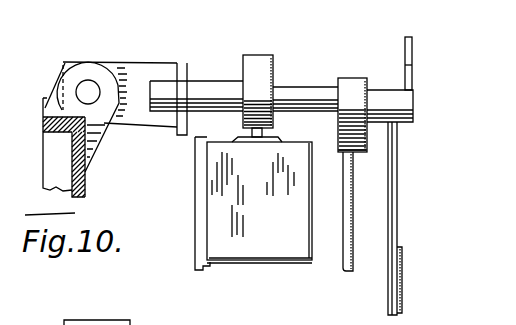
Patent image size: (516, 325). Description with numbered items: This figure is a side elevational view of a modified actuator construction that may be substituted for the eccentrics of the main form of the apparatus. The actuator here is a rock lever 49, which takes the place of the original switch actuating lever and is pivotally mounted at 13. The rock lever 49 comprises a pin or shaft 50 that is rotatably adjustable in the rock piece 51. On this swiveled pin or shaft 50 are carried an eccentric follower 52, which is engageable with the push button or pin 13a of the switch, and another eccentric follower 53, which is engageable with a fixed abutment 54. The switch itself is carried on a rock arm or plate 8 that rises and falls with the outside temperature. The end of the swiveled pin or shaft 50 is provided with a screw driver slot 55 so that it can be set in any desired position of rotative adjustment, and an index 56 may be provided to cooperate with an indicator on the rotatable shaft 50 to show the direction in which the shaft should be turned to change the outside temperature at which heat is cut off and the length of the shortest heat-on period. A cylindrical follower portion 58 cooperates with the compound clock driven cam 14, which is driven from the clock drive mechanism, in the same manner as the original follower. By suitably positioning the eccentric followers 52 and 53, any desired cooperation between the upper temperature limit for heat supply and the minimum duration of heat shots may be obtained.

The rock arm or plate 8 is at (281, 240).
The pivot 13 is at (89, 89).
The push button or pin 13a is at (250, 132).
The compound clock driven cam 14 is at (407, 243).
The rock lever 49 is at (306, 83).
The pin or shaft 50 is at (210, 84).
The rock piece 51 is at (143, 127).
The eccentric follower 52 is at (272, 52).
The eccentric follower 53 is at (339, 150).
The fixed abutment 54 is at (343, 248).
The screw driver slot 55 is at (414, 108).
The index 56 is at (413, 79).
The cylindrical follower portion 58 is at (378, 97).